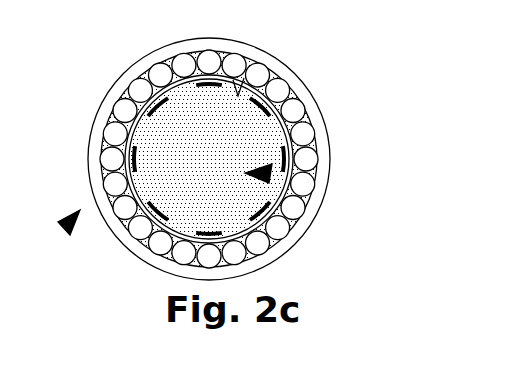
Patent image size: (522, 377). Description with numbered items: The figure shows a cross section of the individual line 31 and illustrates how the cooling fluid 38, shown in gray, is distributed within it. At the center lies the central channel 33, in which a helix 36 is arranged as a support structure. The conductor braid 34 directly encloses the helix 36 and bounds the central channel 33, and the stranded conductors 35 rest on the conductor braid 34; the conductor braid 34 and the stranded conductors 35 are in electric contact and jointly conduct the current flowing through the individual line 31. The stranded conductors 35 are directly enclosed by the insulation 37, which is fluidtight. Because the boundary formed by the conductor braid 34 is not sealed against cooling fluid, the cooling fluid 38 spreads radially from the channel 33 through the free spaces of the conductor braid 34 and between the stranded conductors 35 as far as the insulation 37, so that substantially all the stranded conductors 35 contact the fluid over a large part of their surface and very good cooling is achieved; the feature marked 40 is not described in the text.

The individual line 31 is at (60, 231).
The central channel 33 is at (240, 203).
The conductor braid 34 is at (326, 192).
The stranded conductors 35 is at (306, 158).
The helix 36 is at (278, 108).
The insulation 37 is at (321, 192).
The cooling fluid 38 is at (221, 170).
The dashed arc segments 40 is at (238, 90).